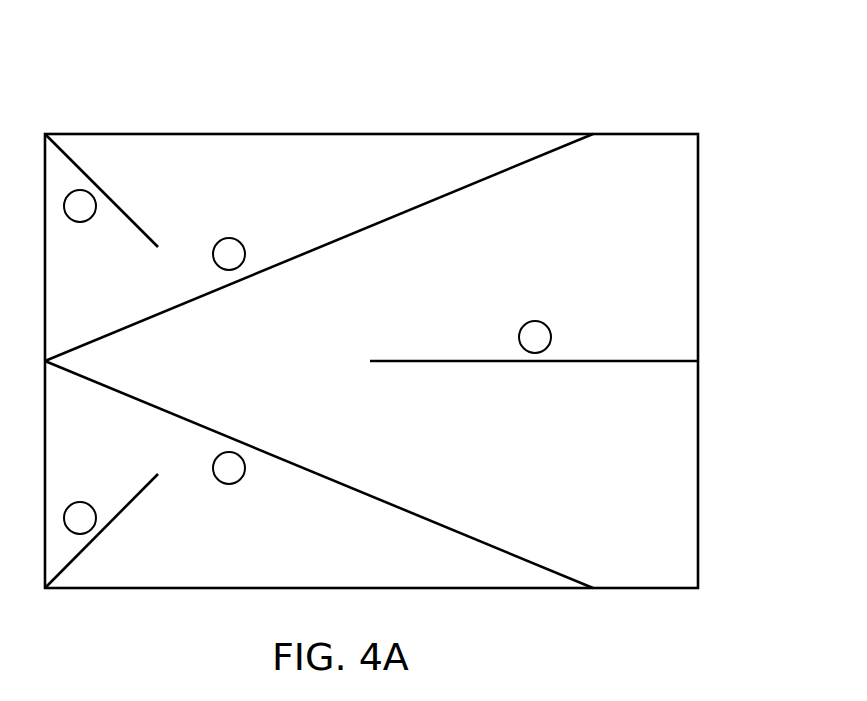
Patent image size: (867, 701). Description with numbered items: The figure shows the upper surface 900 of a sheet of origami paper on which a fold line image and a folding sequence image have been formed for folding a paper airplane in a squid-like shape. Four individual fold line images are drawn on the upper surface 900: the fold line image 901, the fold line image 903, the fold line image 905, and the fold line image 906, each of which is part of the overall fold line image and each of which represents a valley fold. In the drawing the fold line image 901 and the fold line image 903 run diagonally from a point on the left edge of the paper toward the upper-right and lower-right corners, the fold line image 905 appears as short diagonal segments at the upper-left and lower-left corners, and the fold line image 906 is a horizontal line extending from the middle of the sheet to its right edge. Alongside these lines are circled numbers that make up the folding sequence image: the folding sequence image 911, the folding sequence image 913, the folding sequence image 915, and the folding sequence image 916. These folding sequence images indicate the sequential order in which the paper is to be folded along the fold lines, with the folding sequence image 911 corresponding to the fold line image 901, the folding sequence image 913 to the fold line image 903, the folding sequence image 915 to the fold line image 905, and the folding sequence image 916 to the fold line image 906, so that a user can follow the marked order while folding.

The upper surface 900 is at (647, 108).
The fold line image 901 is at (382, 227).
The fold line image 903 is at (383, 500).
The fold line image 905 is at (132, 218).
The fold line image 906 is at (624, 359).
The folding sequence image 911 is at (238, 240).
The folding sequence image 913 is at (236, 483).
The folding sequence image 915 is at (80, 223).
The folding sequence image 916 is at (540, 320).